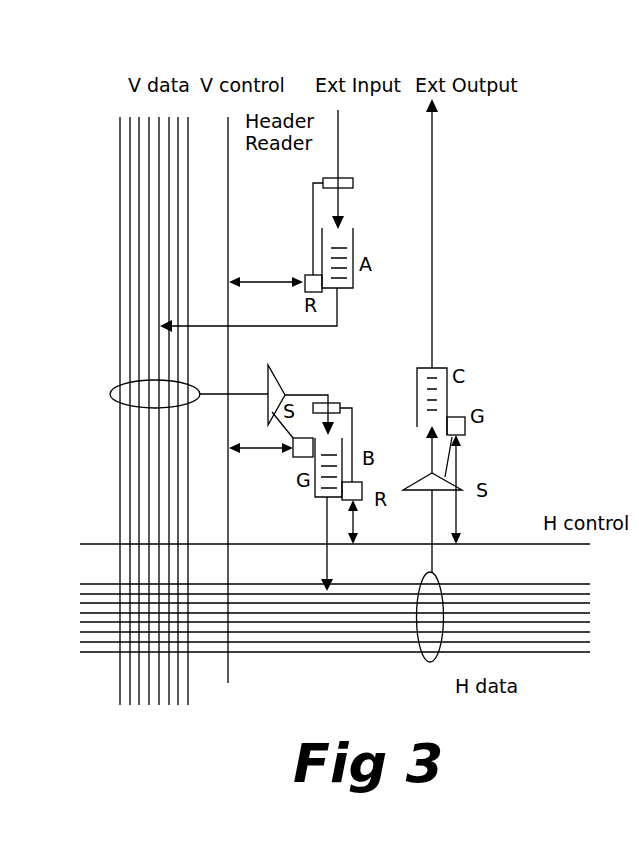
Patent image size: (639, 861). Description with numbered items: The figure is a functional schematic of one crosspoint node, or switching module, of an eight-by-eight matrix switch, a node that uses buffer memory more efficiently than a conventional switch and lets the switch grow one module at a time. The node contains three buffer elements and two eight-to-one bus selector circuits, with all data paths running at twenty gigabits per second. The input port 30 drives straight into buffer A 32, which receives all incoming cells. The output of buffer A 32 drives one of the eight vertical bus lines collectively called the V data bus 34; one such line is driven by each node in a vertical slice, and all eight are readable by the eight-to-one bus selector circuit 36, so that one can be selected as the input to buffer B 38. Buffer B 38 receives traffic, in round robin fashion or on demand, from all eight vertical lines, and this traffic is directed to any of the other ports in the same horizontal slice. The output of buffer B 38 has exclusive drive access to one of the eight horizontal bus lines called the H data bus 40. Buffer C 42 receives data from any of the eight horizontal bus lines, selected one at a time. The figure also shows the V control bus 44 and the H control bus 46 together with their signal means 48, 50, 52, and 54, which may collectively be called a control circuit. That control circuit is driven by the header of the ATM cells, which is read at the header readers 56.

The input port 30 is at (338, 160).
The buffer A 32 is at (353, 228).
The V data bus 34 is at (122, 666).
The 8:1 bus selector circuit 36 is at (284, 388).
The buffer B 38 is at (313, 492).
The H data bus 40 is at (502, 583).
The buffer C 42 is at (433, 365).
The V control bus 44 is at (228, 667).
The H control bus 46 is at (515, 544).
The signal means 48 is at (306, 275).
The signal means 50 is at (293, 455).
The signal means 52 is at (362, 500).
The signal means 54 is at (462, 436).
The header readers 56 is at (325, 178).